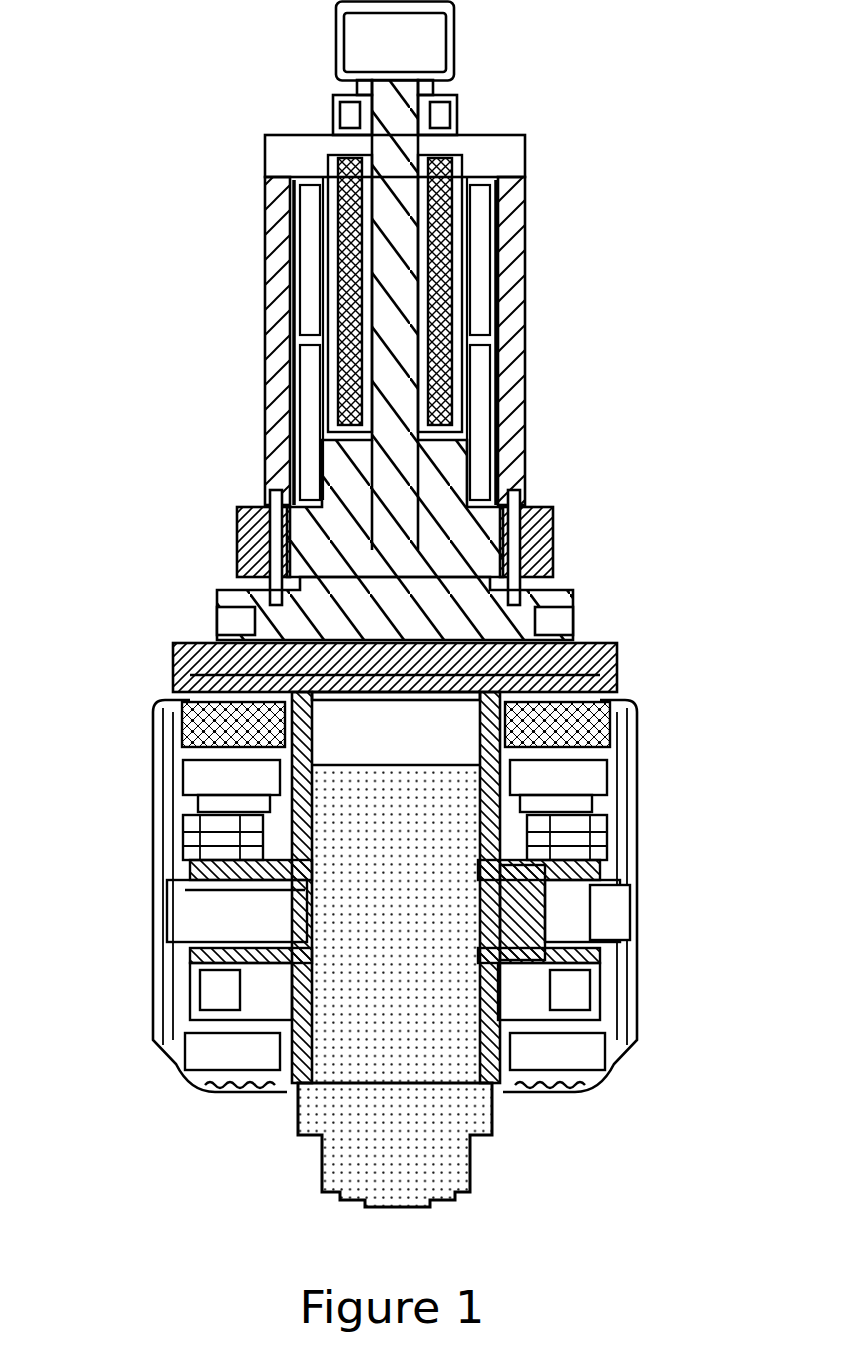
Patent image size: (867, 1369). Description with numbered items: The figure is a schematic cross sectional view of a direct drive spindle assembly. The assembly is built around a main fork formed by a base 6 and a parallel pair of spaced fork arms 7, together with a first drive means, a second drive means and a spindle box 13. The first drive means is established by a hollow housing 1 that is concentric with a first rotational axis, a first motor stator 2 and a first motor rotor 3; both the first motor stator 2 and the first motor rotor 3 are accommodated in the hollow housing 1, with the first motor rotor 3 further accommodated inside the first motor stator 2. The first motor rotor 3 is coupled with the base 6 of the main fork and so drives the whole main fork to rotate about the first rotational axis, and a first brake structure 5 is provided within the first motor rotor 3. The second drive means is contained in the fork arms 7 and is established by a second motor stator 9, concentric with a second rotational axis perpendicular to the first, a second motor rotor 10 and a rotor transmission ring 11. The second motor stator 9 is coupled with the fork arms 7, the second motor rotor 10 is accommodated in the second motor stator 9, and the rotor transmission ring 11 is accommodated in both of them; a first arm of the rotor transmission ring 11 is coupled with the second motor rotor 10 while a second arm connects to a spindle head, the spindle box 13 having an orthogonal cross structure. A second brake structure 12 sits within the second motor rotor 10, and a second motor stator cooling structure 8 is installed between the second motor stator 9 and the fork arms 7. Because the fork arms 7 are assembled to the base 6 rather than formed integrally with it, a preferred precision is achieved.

The hollow housing 1 is at (275, 195).
The first motor stator 2 is at (297, 253).
The first motor rotor 3 is at (313, 302).
The first brake structure 5 is at (340, 178).
The base 6 is at (320, 540).
The fork arms 7 is at (200, 708).
The second motor stator cooling structure 8 is at (180, 772).
The second motor stator 9 is at (208, 778).
The second motor rotor 10 is at (222, 803).
The rotor transmission ring 11 is at (207, 837).
The second brake structure 12 is at (180, 840).
The spindle box 13 is at (170, 873).